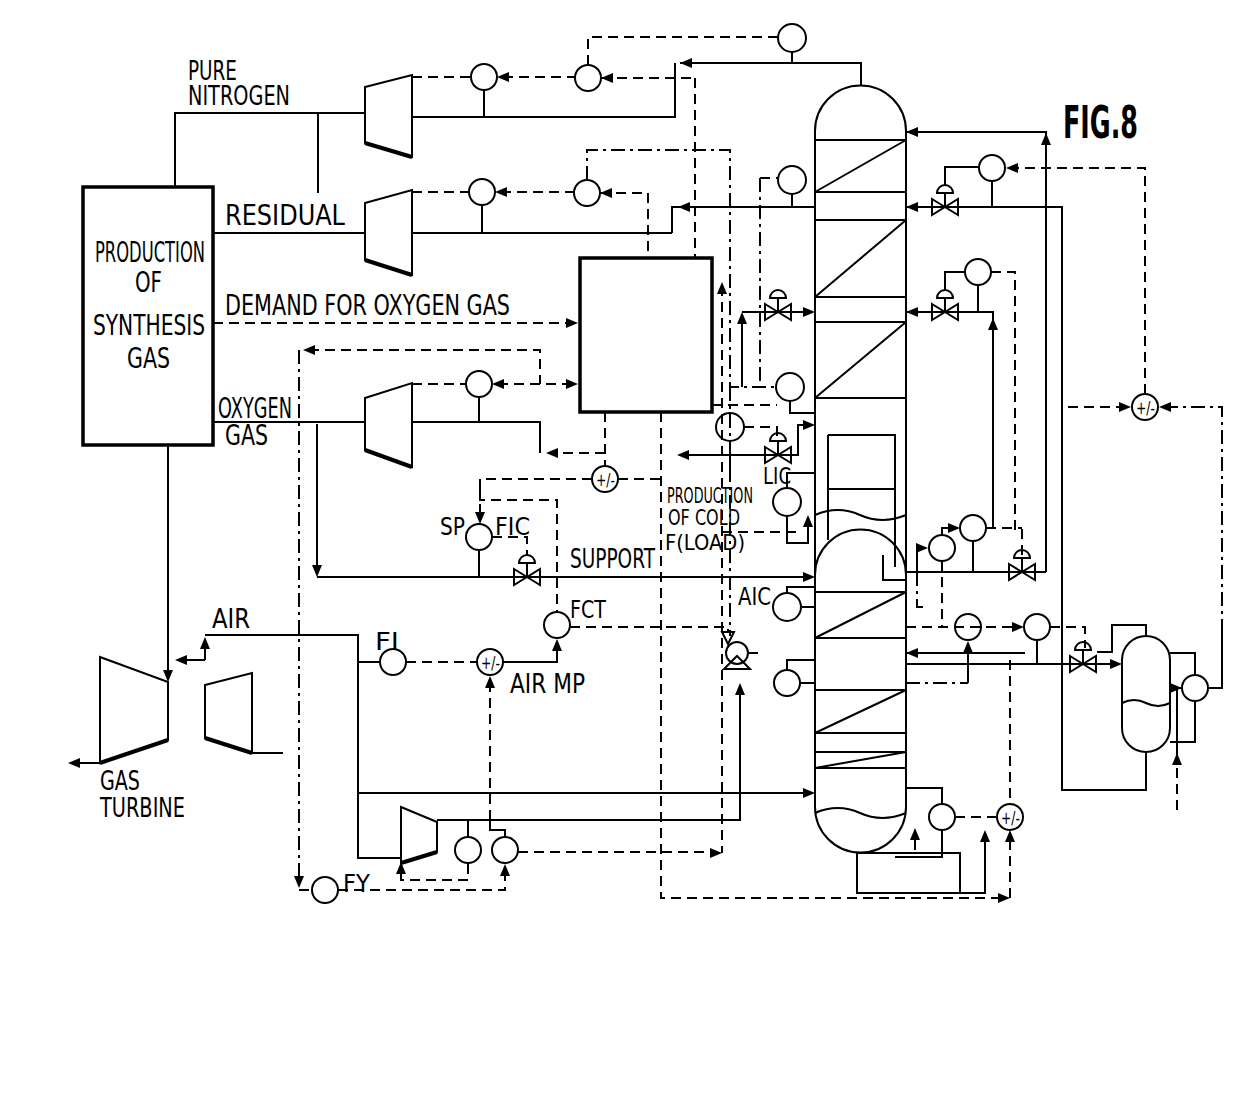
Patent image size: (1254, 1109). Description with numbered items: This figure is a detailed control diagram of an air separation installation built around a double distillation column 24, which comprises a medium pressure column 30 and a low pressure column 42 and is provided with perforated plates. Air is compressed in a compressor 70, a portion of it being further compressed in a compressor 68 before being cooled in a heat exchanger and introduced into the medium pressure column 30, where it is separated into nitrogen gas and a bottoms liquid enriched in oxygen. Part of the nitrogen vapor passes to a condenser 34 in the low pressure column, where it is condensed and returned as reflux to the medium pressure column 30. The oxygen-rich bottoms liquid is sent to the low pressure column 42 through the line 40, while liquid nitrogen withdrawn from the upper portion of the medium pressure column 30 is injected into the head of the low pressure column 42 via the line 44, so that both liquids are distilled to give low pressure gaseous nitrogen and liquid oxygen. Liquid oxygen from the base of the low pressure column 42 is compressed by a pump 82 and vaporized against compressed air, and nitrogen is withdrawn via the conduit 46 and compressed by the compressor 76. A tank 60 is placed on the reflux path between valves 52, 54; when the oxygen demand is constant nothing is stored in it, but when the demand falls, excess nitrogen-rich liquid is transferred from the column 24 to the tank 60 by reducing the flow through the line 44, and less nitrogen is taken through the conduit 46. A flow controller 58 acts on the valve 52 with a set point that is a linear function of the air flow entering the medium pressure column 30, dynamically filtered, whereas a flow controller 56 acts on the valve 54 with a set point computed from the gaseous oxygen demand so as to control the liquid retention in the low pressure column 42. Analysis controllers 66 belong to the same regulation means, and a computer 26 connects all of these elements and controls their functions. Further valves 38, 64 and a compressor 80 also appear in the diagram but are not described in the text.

The double distillation column 24 is at (916, 96).
The computer 26 is at (568, 288).
The medium pressure column 30 is at (815, 730).
The condenser 34 is at (843, 435).
The valve 38 is at (946, 322).
The line 40 is at (857, 876).
The low pressure column 42 is at (815, 247).
The line 44 is at (1062, 478).
The conduit 46 is at (735, 64).
The valve 52 is at (1085, 672).
The valve 54 is at (947, 214).
The flow controller 56 is at (1000, 180).
The flow controller 58 is at (1050, 620).
The tank 60 is at (1122, 725).
The valve 64 is at (806, 280).
The analysis controllers 66 is at (797, 54).
The compressor 68 is at (401, 838).
The compressor 70 is at (252, 700).
The compressor 76 is at (414, 124).
The oxygen compressor 80 is at (384, 452).
The pump 82 is at (748, 660).